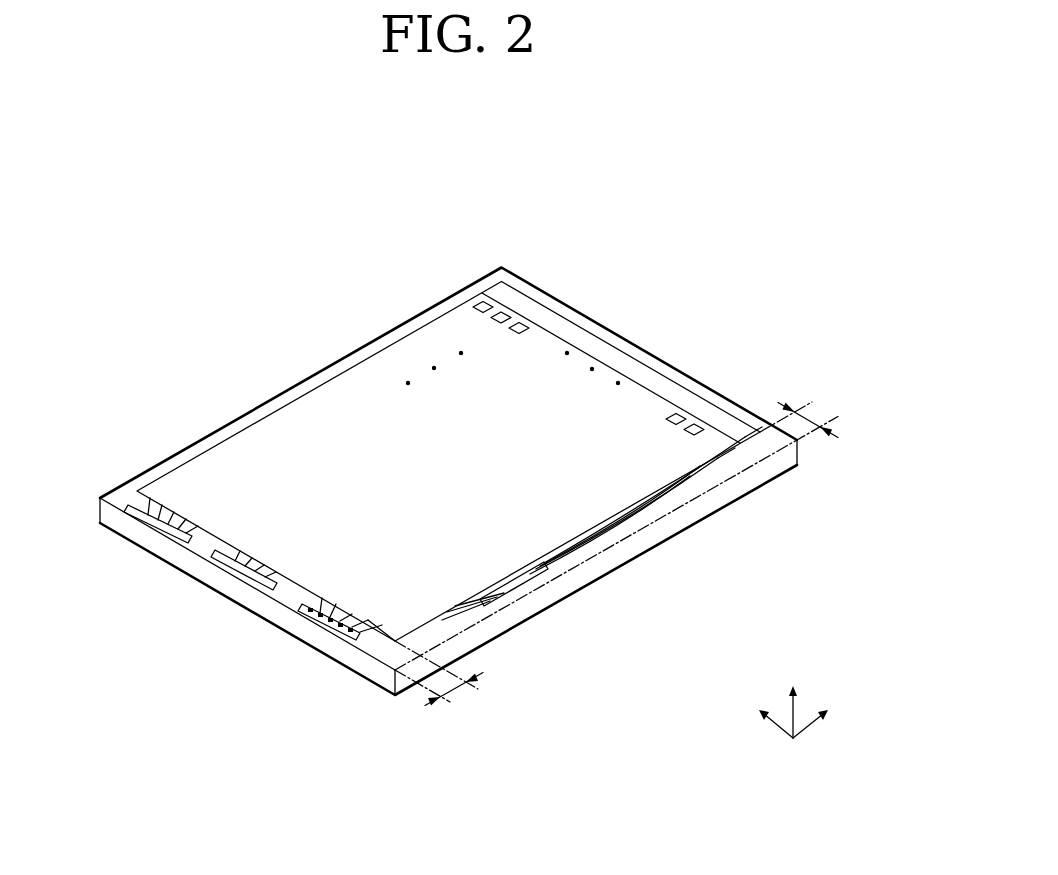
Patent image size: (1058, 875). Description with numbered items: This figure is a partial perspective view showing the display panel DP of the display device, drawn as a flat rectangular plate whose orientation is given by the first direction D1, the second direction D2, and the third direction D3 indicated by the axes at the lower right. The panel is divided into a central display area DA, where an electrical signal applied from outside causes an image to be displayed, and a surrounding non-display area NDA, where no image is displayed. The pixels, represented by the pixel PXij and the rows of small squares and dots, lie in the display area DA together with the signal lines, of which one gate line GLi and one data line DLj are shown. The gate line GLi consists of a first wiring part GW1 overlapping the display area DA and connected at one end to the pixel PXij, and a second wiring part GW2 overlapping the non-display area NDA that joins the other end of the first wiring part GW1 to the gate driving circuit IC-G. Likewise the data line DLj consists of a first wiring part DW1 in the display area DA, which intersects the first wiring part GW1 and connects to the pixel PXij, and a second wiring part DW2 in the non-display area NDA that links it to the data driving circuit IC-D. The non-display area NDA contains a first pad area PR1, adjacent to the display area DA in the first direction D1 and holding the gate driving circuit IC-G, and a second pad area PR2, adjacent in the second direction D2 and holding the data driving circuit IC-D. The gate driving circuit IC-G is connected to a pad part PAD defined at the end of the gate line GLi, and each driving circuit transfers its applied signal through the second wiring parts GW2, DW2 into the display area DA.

The display panel DP is at (671, 258).
The display area DA is at (350, 391).
The non-display area NDA is at (270, 407).
The pixel PXij is at (700, 422).
The first pad area PR1 is at (442, 676).
The second pad area PR2 is at (804, 418).
The data driving circuit IC-D is at (525, 593).
The gate driving circuit IC-G is at (235, 568).
The first wiring part of the data line DW1 is at (738, 432).
The second wiring part of the data line DW2 is at (717, 462).
The data line DLj is at (866, 506).
The first wiring part of the gate line GW1 is at (400, 613).
The second wiring part of the gate line GW2 is at (333, 621).
The gate line GLi is at (343, 743).
The pad part PAD is at (317, 617).
The first direction D1 is at (832, 722).
The second direction D2 is at (758, 722).
The third direction D3 is at (796, 698).